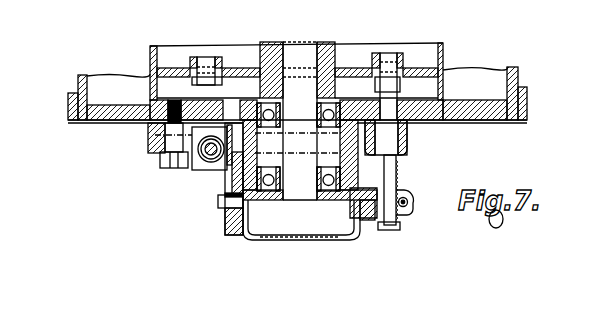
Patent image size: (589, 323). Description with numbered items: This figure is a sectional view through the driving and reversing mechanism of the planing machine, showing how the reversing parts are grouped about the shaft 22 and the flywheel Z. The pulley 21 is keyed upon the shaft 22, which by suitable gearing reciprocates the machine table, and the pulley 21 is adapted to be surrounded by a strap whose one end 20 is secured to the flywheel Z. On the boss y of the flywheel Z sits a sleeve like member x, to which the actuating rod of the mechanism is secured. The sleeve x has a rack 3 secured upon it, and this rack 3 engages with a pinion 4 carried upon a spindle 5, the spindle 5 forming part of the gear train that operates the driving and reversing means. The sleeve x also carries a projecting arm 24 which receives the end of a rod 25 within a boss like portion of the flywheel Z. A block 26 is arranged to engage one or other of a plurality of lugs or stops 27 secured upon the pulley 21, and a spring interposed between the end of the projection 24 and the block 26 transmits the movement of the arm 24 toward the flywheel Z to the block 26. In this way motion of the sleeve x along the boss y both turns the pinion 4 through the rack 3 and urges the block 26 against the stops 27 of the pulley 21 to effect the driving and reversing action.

The pulley 21 is at (444, 55).
The lugs or stops 27 is at (387, 83).
The flywheel Z is at (518, 80).
The block 26 is at (400, 136).
The end of strap 20 is at (396, 167).
The rod 25 is at (406, 192).
The projecting arm 24 is at (379, 232).
The shaft 22 is at (302, 188).
The sleeve like member x is at (363, 219).
The rack 3 is at (224, 192).
The boss y is at (223, 198).
The pinion 4 is at (218, 170).
The spindle 5 is at (195, 170).